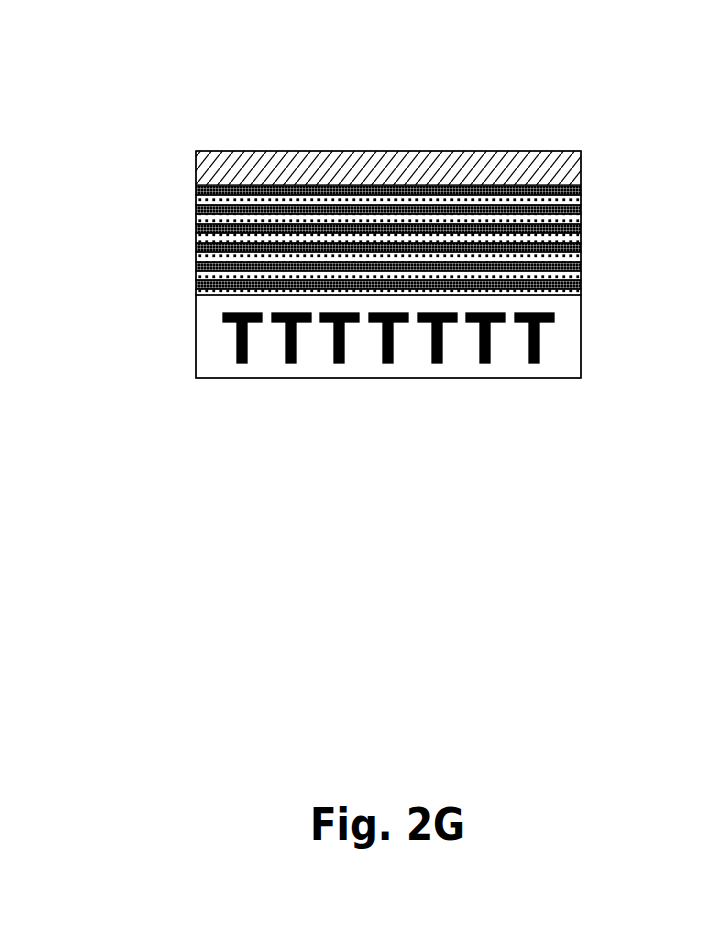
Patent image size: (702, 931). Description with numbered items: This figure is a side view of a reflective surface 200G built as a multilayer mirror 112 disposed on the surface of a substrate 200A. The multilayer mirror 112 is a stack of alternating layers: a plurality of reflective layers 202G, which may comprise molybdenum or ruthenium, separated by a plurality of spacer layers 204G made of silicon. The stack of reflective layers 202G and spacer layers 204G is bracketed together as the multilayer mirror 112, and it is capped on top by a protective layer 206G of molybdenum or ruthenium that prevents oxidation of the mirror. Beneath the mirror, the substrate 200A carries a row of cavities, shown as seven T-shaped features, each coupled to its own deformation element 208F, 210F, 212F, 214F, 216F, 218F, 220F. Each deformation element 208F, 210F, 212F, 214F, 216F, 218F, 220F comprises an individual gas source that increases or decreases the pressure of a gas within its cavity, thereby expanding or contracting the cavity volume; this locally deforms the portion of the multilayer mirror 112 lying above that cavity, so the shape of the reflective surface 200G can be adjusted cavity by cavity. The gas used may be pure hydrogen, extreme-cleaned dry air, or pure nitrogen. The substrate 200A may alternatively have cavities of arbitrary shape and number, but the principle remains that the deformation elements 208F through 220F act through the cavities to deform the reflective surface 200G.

The reflective surface 200G is at (297, 199).
The protective layer 206G is at (353, 151).
The reflective layers 202G is at (490, 285).
The spacer layers 204G is at (196, 292).
The multilayer mirror 112 is at (364, 208).
The substrate 200A is at (345, 336).
The deformation element 208F is at (194, 424).
The deformation element 210F is at (245, 469).
The deformation element 212F is at (292, 515).
The deformation element 214F is at (341, 563).
The deformation element 216F is at (390, 613).
The deformation element 218F is at (439, 661).
The deformation element 220F is at (488, 710).